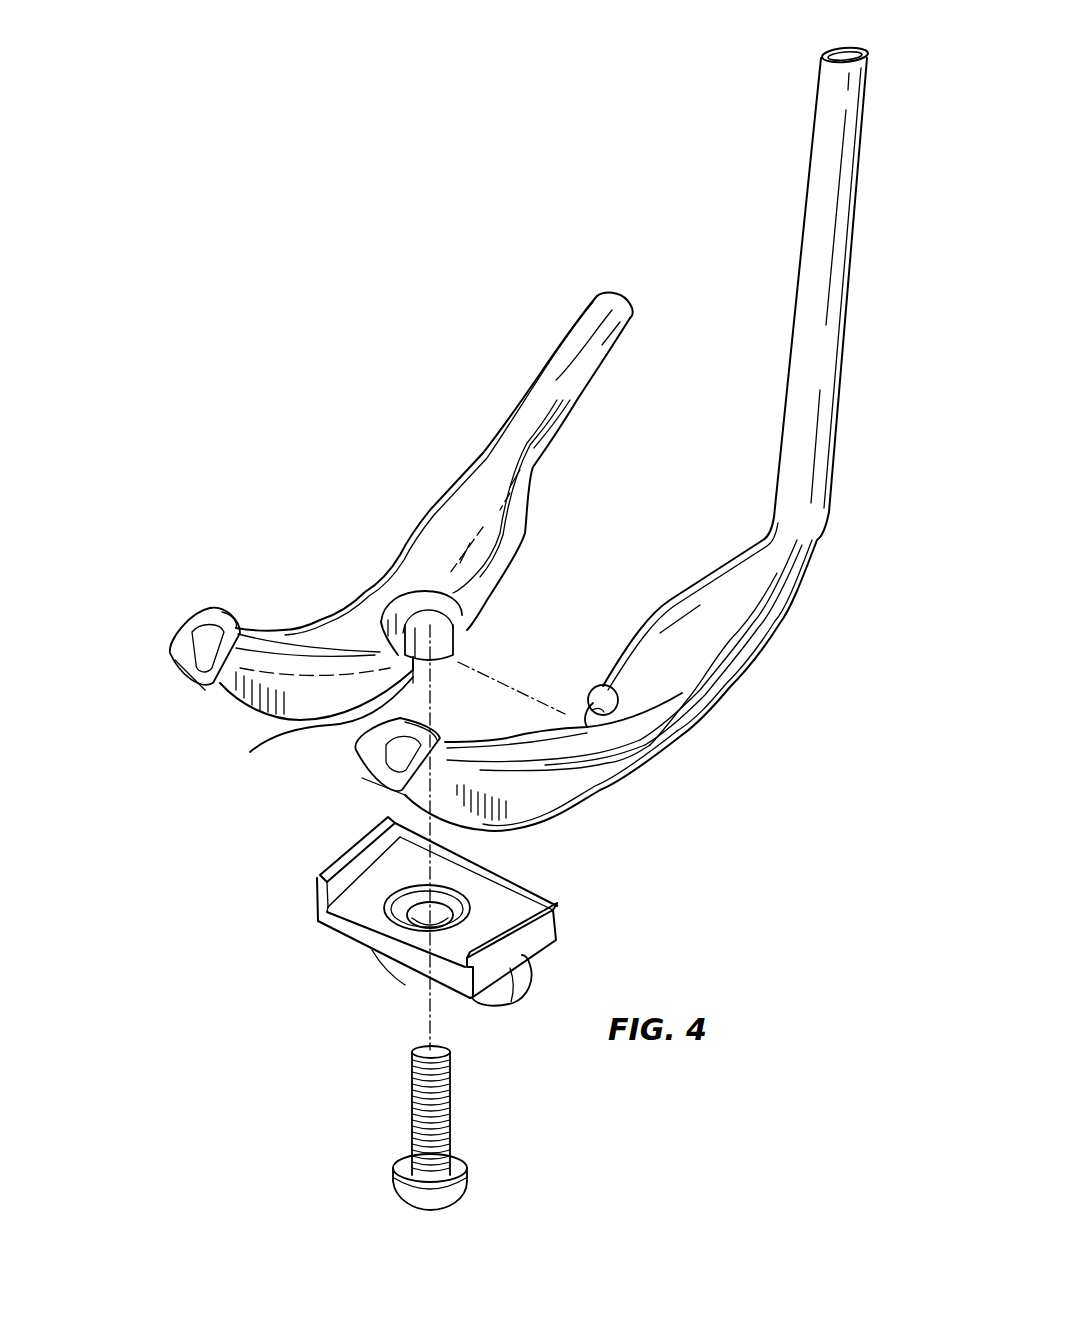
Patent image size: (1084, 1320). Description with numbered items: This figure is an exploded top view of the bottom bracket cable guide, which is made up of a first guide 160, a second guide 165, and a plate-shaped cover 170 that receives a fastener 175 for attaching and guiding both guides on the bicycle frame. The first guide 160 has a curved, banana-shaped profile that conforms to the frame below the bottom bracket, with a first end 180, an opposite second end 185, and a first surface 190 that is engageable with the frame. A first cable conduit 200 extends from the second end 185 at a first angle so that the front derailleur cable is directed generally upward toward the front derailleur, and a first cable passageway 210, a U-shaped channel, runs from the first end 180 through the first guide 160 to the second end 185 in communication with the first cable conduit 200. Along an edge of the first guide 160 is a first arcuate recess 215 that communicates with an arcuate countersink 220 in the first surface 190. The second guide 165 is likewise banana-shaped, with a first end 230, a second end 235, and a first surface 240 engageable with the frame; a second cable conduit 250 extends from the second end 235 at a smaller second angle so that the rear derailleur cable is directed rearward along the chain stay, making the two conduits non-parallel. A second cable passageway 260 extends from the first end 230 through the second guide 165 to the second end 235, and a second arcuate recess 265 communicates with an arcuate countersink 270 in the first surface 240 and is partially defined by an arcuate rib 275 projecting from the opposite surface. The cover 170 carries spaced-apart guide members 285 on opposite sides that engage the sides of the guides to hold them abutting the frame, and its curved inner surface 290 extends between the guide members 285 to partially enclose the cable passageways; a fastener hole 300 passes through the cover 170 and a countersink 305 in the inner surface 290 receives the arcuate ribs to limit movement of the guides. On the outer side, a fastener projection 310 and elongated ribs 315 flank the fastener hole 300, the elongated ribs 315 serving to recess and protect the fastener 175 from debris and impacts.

The first guide 160 is at (677, 740).
The second guide 165 is at (359, 597).
The cover 170 is at (552, 938).
The fastener 175 is at (455, 1170).
The first end 180 is at (355, 743).
The second end 185 is at (807, 563).
The first surface 190 is at (663, 632).
The first cable conduit 200 is at (836, 360).
The first cable passageway 210 is at (383, 777).
The first arcuate recess 215 is at (575, 723).
The arcuate countersink 220 is at (600, 703).
The first end 230 is at (190, 632).
The second end 235 is at (525, 508).
The first surface 240 is at (435, 530).
The second cable conduit 250 is at (567, 360).
The second cable passageway 260 is at (192, 658).
The second arcuate recess 265 is at (437, 640).
The arcuate countersink 270 is at (445, 600).
The arcuate rib 275 is at (250, 752).
The guide members 285 is at (333, 885).
The inner surface 290 is at (353, 910).
The fastener hole 300 is at (442, 912).
The countersink 305 is at (390, 915).
The fastener projection 310 is at (403, 968).
The elongated ribs 315 is at (527, 1003).